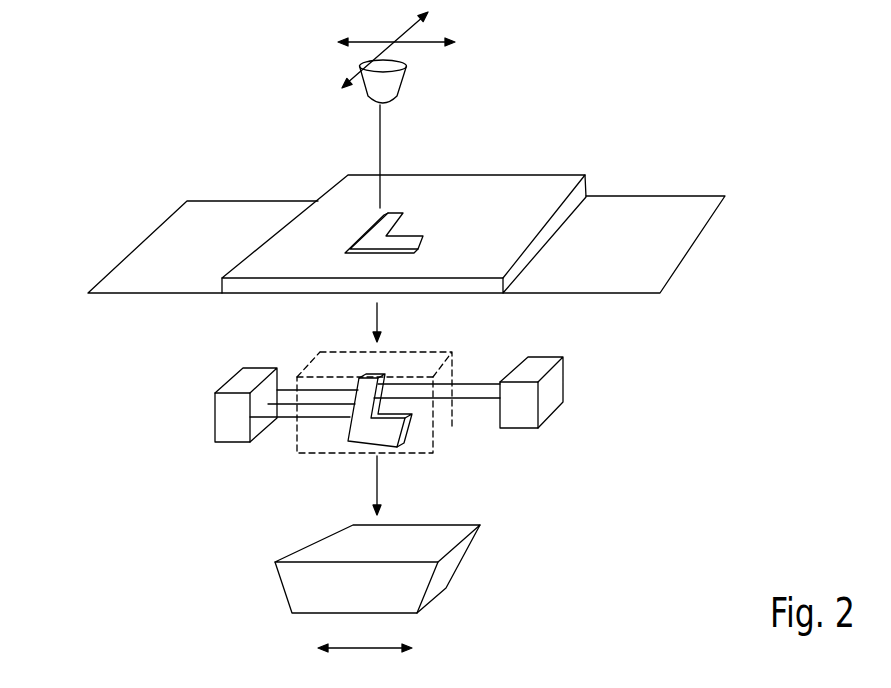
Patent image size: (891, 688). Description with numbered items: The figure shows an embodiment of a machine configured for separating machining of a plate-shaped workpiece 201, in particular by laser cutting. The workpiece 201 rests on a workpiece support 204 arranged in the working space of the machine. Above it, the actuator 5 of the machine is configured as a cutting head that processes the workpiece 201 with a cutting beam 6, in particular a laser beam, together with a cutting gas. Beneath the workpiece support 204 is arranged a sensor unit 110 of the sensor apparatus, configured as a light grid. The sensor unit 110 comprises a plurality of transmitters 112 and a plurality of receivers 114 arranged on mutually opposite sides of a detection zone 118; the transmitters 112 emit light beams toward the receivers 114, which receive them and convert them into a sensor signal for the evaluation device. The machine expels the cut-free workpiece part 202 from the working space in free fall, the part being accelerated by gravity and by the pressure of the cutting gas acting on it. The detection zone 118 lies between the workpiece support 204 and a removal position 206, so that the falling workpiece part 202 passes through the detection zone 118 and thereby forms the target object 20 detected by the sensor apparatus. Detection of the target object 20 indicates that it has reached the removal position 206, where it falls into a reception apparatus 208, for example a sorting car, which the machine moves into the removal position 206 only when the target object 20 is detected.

The actuator 5 is at (400, 85).
The cutting beam 6 is at (380, 140).
The workpiece 201 is at (587, 188).
The workpiece support 204 is at (682, 262).
The sensor unit 110 is at (420, 438).
The transmitters 112 is at (225, 445).
The receivers 114 is at (565, 385).
The detection zone 118 is at (447, 437).
The target object 20 is at (338, 448).
The cut-free workpiece part 202 is at (350, 443).
The removal position 206 is at (441, 585).
The reception apparatus 208 is at (442, 593).